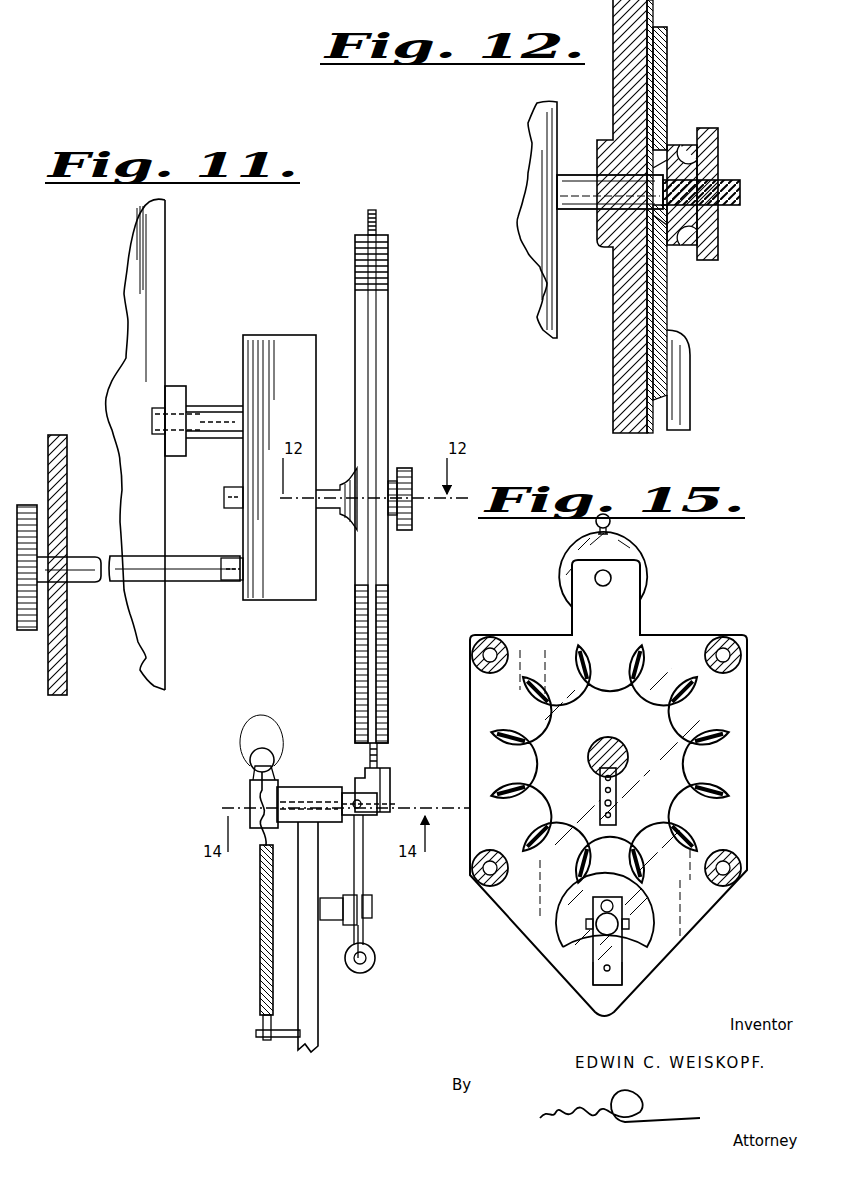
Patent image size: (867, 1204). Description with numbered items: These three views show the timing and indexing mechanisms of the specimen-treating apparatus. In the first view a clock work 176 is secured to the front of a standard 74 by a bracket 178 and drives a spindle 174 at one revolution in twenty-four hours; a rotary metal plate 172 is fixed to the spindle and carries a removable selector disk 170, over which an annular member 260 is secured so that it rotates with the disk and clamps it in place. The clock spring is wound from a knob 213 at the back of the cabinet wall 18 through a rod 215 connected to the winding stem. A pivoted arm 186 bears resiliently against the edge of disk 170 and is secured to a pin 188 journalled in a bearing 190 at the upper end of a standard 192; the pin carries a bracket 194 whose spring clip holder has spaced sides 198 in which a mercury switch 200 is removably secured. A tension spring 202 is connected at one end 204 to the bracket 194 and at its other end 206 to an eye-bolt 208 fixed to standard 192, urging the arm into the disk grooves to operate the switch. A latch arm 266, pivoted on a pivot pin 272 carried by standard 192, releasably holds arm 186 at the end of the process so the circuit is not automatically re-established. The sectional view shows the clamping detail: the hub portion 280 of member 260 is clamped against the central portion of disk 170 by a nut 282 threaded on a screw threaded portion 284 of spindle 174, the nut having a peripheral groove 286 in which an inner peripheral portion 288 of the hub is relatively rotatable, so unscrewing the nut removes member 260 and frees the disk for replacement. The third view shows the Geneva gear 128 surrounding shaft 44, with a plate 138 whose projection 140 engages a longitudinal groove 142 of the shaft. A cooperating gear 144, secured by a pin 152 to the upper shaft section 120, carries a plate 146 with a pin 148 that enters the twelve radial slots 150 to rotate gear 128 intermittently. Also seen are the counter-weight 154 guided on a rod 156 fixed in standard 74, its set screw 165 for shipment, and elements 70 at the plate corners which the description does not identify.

In FIG. 11, the standard 74 is at (162, 238).
In FIG. 11, the bracket 178 is at (215, 410).
In FIG. 11, the clock work 176 is at (285, 342).
In FIG. 12, the clock work 176 is at (548, 138).
In FIG. 11, the spindle 174 is at (328, 512).
In FIG. 12, the spindle 174 is at (575, 212).
In FIG. 11, the rotary metal plate 172 is at (358, 293).
In FIG. 12, the rotary metal plate 172 is at (620, 86).
In FIG. 11, the annular member 260 is at (383, 377).
In FIG. 11, the rotary selector disk 170 is at (380, 571).
In FIG. 12, the rotary selector disk 170 is at (652, 73).
In FIG. 11, the nut 282 is at (405, 466).
In FIG. 12, the nut 282 is at (710, 130).
In FIG. 11, the cabinet wall 18 is at (55, 460).
In FIG. 11, the knob 213 is at (25, 505).
In FIG. 11, the rod 215 is at (119, 586).
In FIG. 11, the pivoted arm 186 is at (391, 785).
In FIG. 11, the pin 188 is at (325, 795).
In FIG. 11, the bearing 190 is at (299, 788).
In FIG. 11, the bracket 194 is at (258, 791).
In FIG. 11, the spaced sides 198 is at (261, 734).
In FIG. 11, the mercury switch 200 is at (262, 748).
In FIG. 11, the spring end 204 is at (256, 833).
In FIG. 11, the tension spring 202 is at (260, 951).
In FIG. 11, the spring end 206 is at (262, 1025).
In FIG. 11, the eye-bolt 208 is at (280, 1040).
In FIG. 11, the standard 192 is at (318, 1025).
In FIG. 11, the latch arm 266 is at (364, 885).
In FIG. 11, the pivot pin 272 is at (330, 925).
In FIG. 12, the hub portion 280 is at (668, 43).
In FIG. 12, the peripheral groove 286 is at (668, 150).
In FIG. 12, the screw threaded portion 284 is at (741, 186).
In FIG. 12, the inner peripheral portion 288 is at (668, 265).
In FIG. 15, the Geneva gear 128 is at (700, 716).
In FIG. 15, the radial slots 150 is at (722, 790).
In FIG. 15, the counter-weight 154 is at (648, 576).
In FIG. 15, the set screw 165 is at (612, 520).
In FIG. 15, the rod 156 is at (612, 581).
In FIG. 15, the bolt 70 is at (479, 650).
In FIG. 15, the shaft 44 is at (612, 752).
In FIG. 15, the plate 138 is at (596, 803).
In FIG. 15, the projection 140 is at (598, 784).
In FIG. 15, the longitudinal groove 142 is at (620, 776).
In FIG. 15, the cooperating gear 144 is at (650, 918).
In FIG. 15, the plate 146 is at (622, 975).
In FIG. 15, the pin 152 is at (620, 926).
In FIG. 15, the upper shaft section 120 is at (622, 942).
In FIG. 15, the pin 148 is at (618, 992).